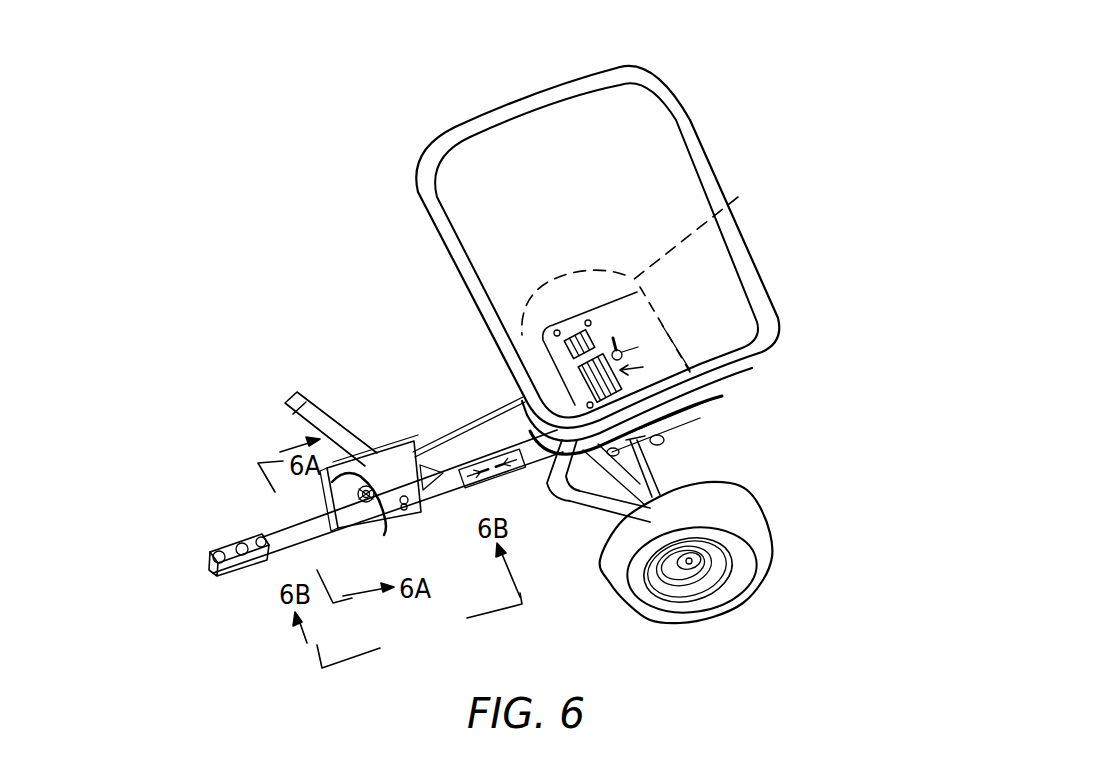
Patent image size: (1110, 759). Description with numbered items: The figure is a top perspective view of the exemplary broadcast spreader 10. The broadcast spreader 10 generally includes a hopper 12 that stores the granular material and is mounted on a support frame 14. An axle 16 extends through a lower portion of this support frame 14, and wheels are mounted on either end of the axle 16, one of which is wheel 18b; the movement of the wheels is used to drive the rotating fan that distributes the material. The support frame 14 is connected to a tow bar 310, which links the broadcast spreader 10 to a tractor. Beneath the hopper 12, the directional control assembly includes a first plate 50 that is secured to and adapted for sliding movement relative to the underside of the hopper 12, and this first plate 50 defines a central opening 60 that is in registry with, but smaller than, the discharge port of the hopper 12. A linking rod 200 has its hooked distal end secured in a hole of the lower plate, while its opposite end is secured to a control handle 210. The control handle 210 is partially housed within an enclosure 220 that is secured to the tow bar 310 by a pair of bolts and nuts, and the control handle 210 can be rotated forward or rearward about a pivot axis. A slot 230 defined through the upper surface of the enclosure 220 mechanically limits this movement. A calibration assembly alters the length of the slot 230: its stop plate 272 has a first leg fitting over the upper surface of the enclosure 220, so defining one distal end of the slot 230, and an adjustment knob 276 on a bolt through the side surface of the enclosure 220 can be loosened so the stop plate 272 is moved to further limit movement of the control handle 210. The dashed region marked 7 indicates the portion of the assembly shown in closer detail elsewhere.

The broadcast spreader 10 is at (746, 94).
The detail region of FIG. 7 is at (640, 277).
The hopper 12 is at (766, 350).
The support frame 14 is at (590, 504).
The axle 16 is at (653, 470).
The wheel 18b is at (703, 608).
The first plate 50 is at (575, 340).
The central opening 60 is at (583, 368).
The linking rod 200 is at (515, 402).
The control handle 210 is at (300, 412).
The enclosure 220 is at (408, 447).
The slot 230 is at (433, 480).
The stop plate 272 is at (332, 482).
The adjustment knob 276 is at (373, 503).
The tow bar 310 is at (282, 555).